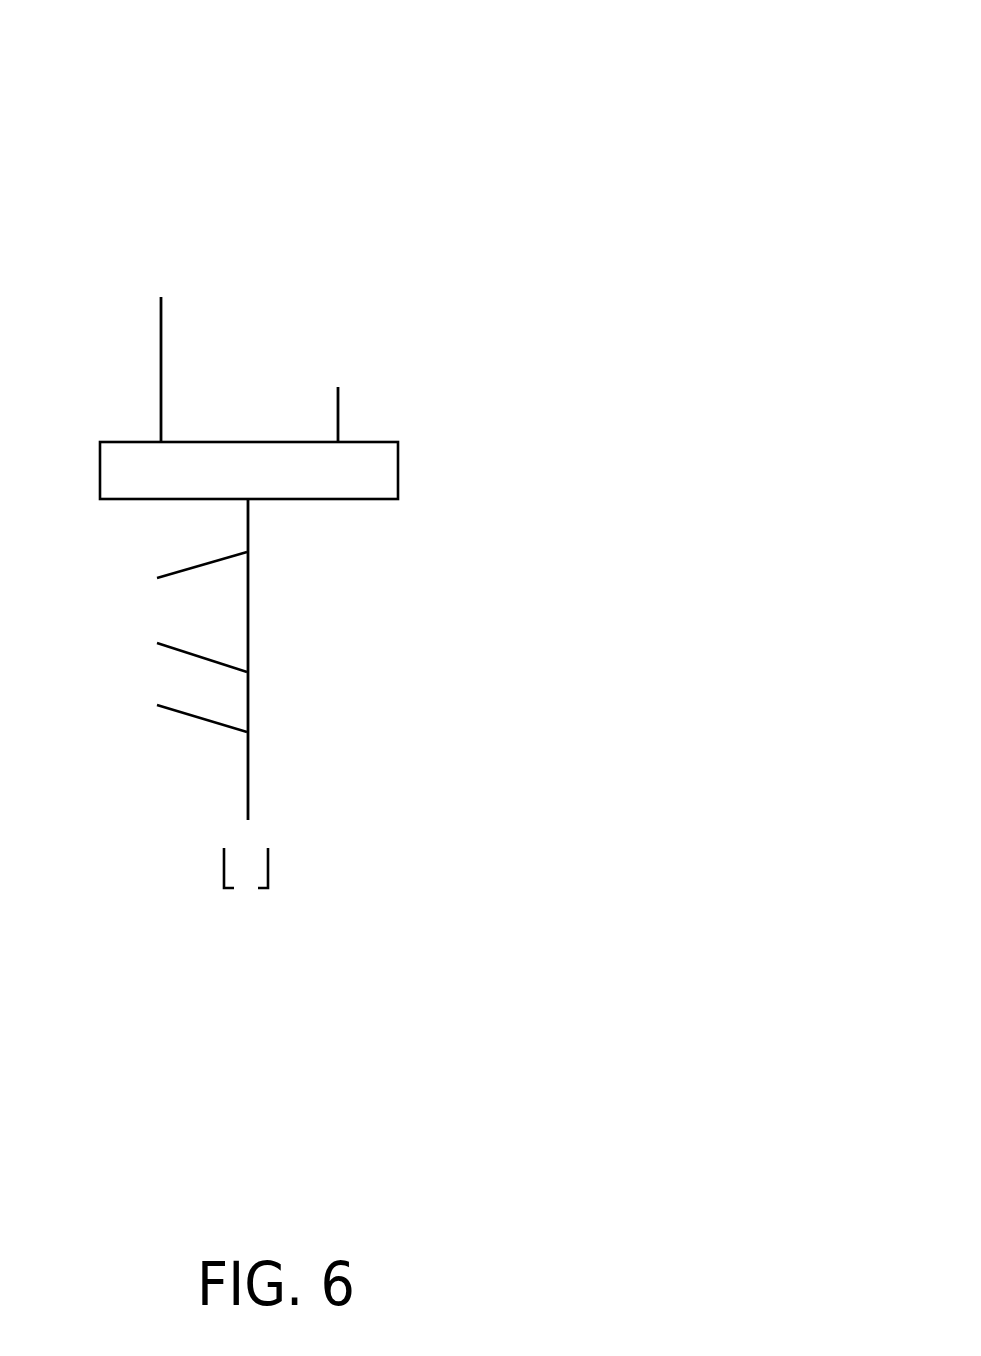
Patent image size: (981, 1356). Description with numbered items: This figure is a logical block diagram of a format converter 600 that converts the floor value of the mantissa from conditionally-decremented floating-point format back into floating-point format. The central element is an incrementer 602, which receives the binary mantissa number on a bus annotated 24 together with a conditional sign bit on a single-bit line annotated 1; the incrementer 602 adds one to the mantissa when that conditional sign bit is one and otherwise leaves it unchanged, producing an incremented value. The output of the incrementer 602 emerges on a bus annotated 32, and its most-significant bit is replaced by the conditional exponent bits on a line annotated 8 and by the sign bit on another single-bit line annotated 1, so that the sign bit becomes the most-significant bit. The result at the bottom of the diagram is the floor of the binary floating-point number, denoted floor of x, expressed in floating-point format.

The format converter 600 is at (379, 448).
The incrementer 602 is at (397, 472).
The 24-bit mantissa input m3 24 is at (145, 383).
The 1-bit signal lines 1 is at (323, 397).
The 8-bit exponent e3 8 is at (218, 643).
The 32-bit output floor(x) 32 is at (232, 773).